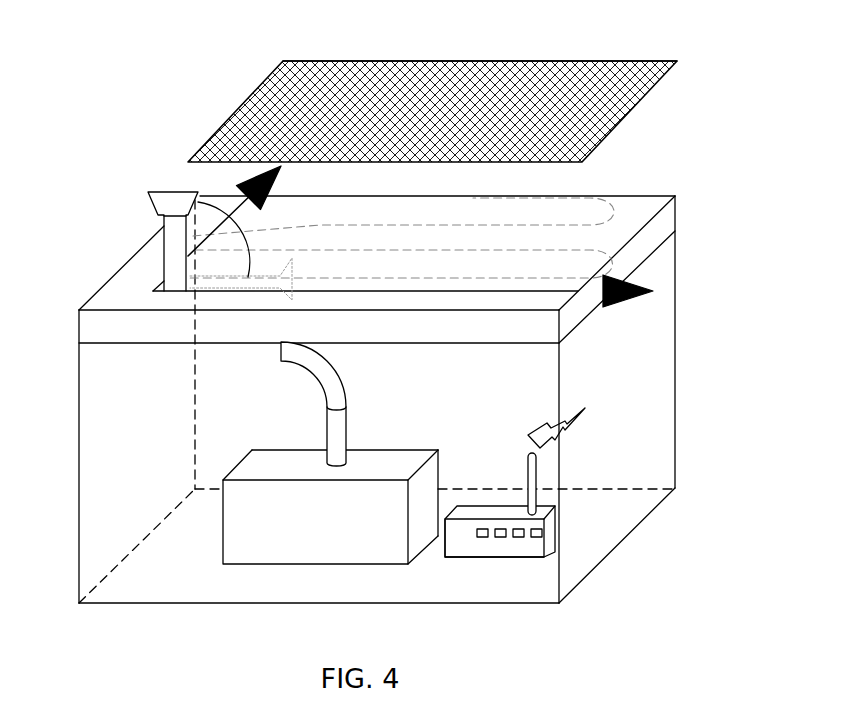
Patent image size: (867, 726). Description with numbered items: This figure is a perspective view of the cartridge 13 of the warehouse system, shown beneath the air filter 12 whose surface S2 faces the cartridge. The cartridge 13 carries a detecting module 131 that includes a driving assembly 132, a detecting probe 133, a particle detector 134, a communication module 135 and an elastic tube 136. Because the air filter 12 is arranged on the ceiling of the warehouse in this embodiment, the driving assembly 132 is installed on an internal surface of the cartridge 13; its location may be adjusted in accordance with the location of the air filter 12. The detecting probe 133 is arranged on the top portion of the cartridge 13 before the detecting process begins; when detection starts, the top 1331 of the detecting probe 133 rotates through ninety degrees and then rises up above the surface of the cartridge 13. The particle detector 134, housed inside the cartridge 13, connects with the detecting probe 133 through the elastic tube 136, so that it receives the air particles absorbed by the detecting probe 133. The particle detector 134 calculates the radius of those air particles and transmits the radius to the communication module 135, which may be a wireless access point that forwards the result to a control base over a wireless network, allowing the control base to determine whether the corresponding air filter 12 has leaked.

The air filter 12 is at (240, 103).
The second surface of filter mesh S2 is at (437, 73).
The cartridge 13 is at (78, 532).
The detecting module 131 is at (228, 447).
The driving assembly 132 is at (93, 324).
The detecting probe 133 is at (163, 265).
The top of the detecting probe 1331 is at (168, 195).
The particle detector 134 is at (392, 468).
The communication module 135 is at (508, 505).
The elastic tube 136 is at (340, 435).